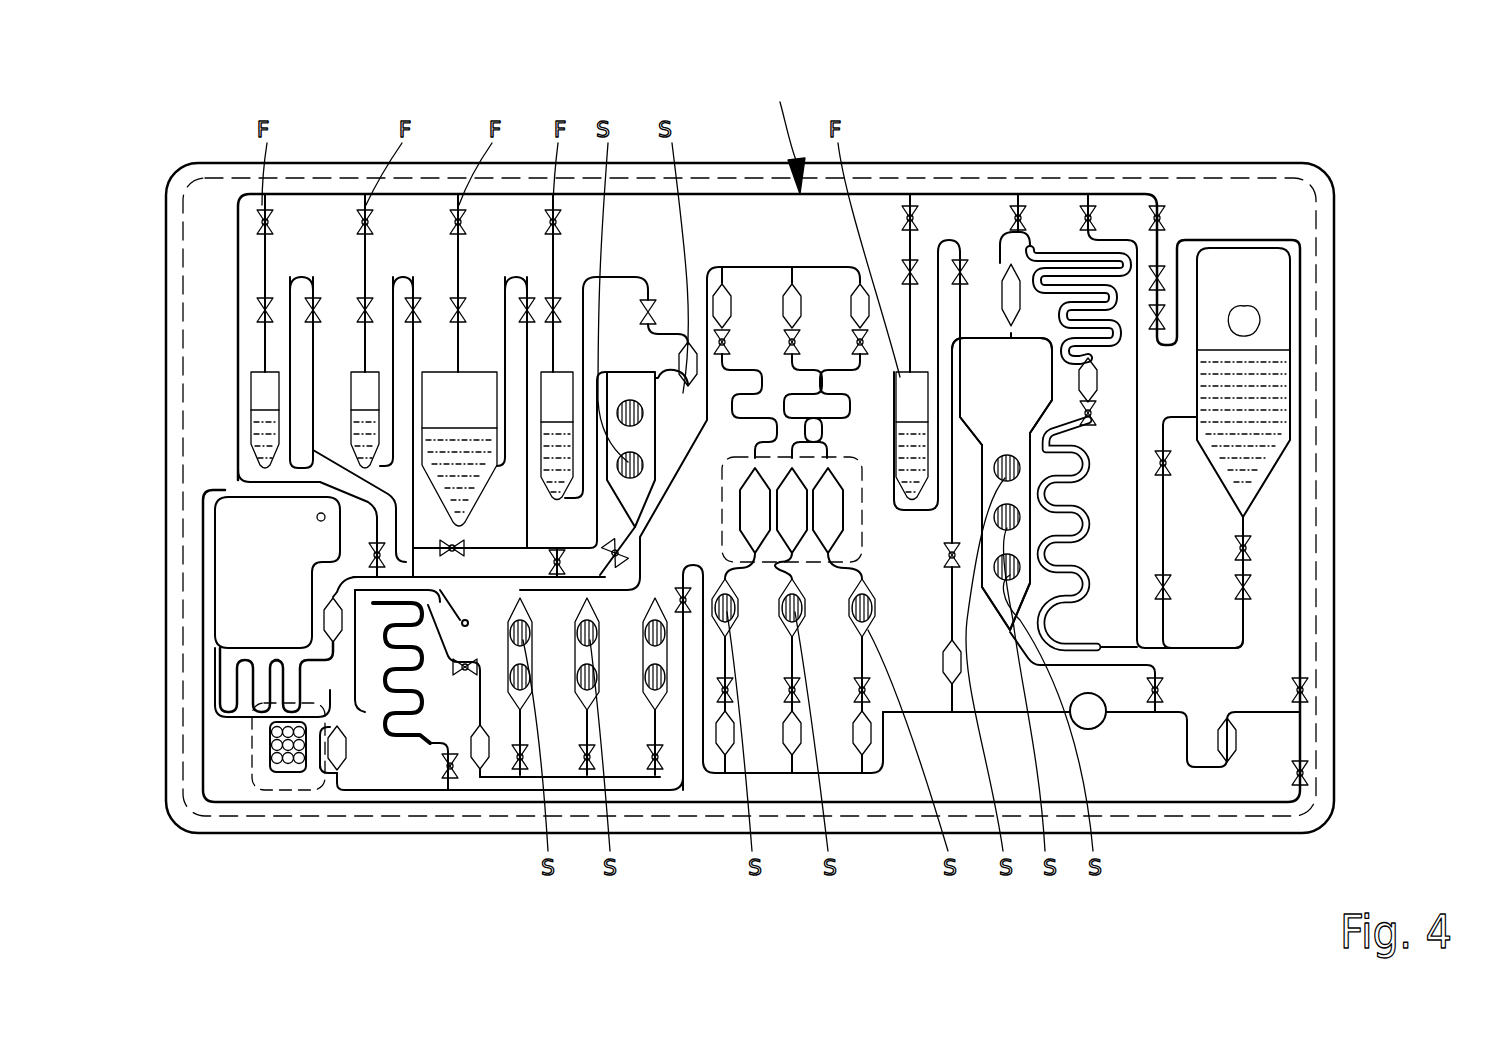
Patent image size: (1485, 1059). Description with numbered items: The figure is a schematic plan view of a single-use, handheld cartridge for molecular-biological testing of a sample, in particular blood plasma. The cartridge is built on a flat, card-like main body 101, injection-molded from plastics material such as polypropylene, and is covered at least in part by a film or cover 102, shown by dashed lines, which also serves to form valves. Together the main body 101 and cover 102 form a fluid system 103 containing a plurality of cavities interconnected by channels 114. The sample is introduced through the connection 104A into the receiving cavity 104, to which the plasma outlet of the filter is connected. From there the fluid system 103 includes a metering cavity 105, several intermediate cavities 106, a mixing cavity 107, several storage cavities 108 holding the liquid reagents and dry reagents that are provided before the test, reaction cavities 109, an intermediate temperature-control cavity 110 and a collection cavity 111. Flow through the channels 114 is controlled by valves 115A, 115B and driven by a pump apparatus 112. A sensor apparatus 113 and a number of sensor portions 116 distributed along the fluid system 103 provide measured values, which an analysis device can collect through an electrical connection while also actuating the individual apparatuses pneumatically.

The main body 101 is at (1297, 165).
The cover 102 is at (1318, 195).
The fluid system 103 is at (781, 134).
The receiving cavity 104 is at (1252, 268).
The connection 104A is at (1258, 322).
The metering cavity 105 is at (1125, 260).
The intermediate cavity 106 is at (633, 395).
The mixing cavity 107 is at (990, 400).
The storage cavity 108 is at (368, 400).
The reaction cavity 109 is at (755, 512).
The intermediate temperature-control cavity 110 is at (383, 740).
The collection cavity 111 is at (250, 593).
The pump apparatus 112 is at (1097, 716).
The sensor apparatus 113 is at (232, 791).
The channels 114 is at (238, 260).
The valves 115A is at (268, 300).
The valves 115B is at (258, 222).
The sensor portions 116 is at (722, 300).